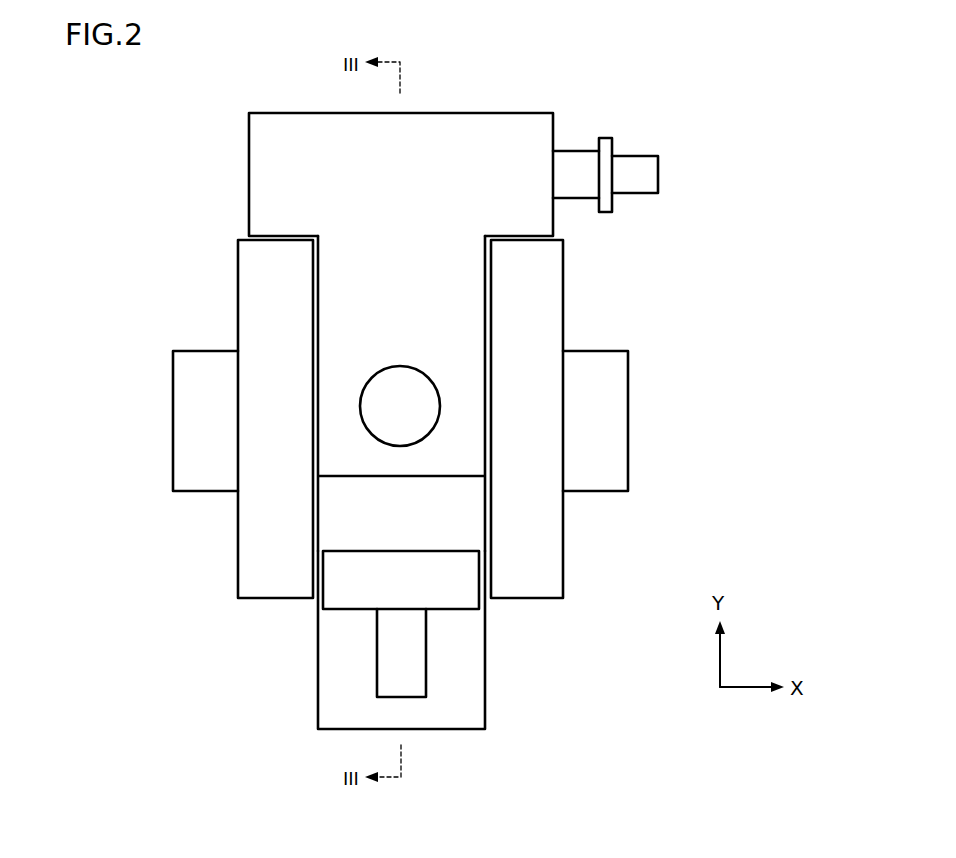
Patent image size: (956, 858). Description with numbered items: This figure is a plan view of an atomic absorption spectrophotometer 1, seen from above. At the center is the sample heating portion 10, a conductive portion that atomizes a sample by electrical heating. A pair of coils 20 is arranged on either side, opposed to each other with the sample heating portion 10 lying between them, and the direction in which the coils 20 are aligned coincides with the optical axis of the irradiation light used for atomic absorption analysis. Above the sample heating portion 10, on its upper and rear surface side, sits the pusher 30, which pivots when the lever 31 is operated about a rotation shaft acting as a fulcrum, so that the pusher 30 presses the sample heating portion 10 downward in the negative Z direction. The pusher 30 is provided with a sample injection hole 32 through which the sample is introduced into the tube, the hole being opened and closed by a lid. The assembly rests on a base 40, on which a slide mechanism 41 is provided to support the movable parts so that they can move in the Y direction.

The atomic absorption spectrophotometer 1 is at (532, 88).
The sample heating portion 10 is at (465, 512).
The pair of coils 20 is at (277, 585).
The pusher 30 is at (272, 175).
The lever 31 is at (645, 177).
The sample injection hole 32 is at (456, 403).
The base 40 is at (472, 693).
The slide mechanism 41 is at (393, 676).